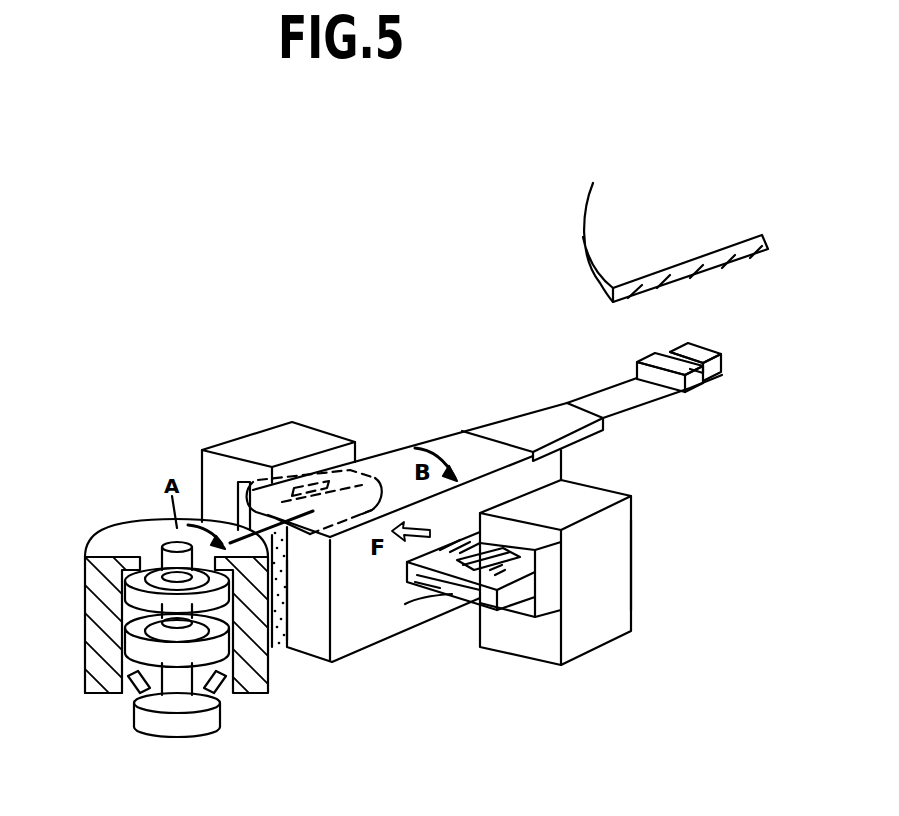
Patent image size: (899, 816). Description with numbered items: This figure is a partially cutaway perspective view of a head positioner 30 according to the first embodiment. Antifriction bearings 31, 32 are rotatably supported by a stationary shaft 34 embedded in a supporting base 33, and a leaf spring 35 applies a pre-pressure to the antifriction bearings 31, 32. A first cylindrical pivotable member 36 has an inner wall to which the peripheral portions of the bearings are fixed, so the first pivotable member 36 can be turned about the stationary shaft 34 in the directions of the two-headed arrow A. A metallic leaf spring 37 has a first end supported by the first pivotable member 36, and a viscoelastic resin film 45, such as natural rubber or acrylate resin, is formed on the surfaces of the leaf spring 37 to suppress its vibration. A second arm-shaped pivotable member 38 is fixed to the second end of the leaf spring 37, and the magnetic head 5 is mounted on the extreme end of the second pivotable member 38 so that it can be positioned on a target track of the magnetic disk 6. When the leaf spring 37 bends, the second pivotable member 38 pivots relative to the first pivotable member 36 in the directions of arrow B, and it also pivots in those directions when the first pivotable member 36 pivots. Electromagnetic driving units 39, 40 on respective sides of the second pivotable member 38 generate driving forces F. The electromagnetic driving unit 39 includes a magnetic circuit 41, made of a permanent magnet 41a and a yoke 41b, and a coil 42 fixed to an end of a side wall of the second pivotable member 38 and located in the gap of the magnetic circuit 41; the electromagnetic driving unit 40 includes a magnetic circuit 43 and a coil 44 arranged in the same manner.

The magnetic head 5 is at (716, 372).
The magnetic disk 6 is at (690, 225).
The head positioner 30 is at (449, 194).
The antifriction bearing 31 is at (88, 598).
The antifriction bearing 32 is at (128, 683).
The supporting base 33 is at (193, 727).
The stationary shaft 34 is at (168, 545).
The leaf spring 35 is at (214, 684).
The first cylindrical pivotable member 36 is at (97, 680).
The metallic leaf spring 37 is at (277, 648).
The second arm-shaped pivotable member 38 is at (450, 446).
The electromagnetic driving unit 39 is at (510, 703).
The electromagnetic driving unit 40 is at (343, 373).
The magnetic circuit 41 is at (596, 580).
The permanent magnet 41a is at (511, 553).
The yoke 41b is at (624, 553).
The coil 42 is at (472, 593).
The magnetic circuit 43 is at (245, 450).
The coil 44 is at (358, 465).
The viscoelastic resin film 45 is at (290, 612).